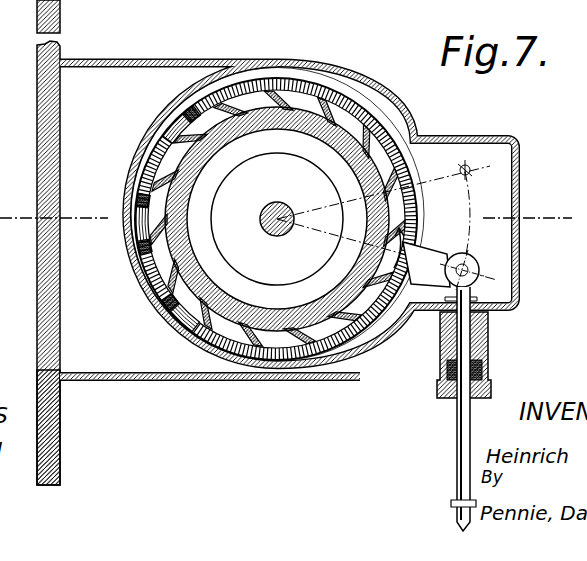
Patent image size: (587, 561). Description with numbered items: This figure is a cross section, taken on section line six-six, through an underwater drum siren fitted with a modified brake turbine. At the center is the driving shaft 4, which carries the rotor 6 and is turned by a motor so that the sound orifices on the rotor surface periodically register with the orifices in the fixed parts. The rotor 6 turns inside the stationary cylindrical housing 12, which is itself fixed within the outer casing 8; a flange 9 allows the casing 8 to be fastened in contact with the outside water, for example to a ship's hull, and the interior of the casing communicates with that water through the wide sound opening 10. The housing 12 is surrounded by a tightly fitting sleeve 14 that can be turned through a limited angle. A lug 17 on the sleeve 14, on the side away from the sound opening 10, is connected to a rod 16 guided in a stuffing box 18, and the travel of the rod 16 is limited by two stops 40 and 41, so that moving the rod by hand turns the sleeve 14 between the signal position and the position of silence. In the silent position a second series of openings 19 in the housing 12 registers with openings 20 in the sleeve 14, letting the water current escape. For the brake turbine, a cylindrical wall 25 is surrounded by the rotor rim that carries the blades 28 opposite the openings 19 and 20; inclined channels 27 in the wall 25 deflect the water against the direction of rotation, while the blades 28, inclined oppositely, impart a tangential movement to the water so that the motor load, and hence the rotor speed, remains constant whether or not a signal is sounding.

The driving shaft 4 is at (277, 206).
The rotor 6 is at (293, 218).
The outer casing 8 is at (313, 380).
The flange 9 is at (52, 436).
The sound opening 10 is at (50, 160).
The stationary cylindrical housing 12 is at (368, 94).
The sleeve 14 is at (213, 86).
The rod 16 is at (462, 410).
The lug 17 is at (437, 253).
The stuffing box 18 is at (484, 388).
The openings 19 is at (183, 118).
The openings 20 is at (187, 130).
The cylindrical wall 25 is at (258, 124).
The inclined channels 27 is at (358, 148).
The blades 28 is at (313, 312).
The stop 40 is at (488, 260).
The stop 41 is at (451, 502).